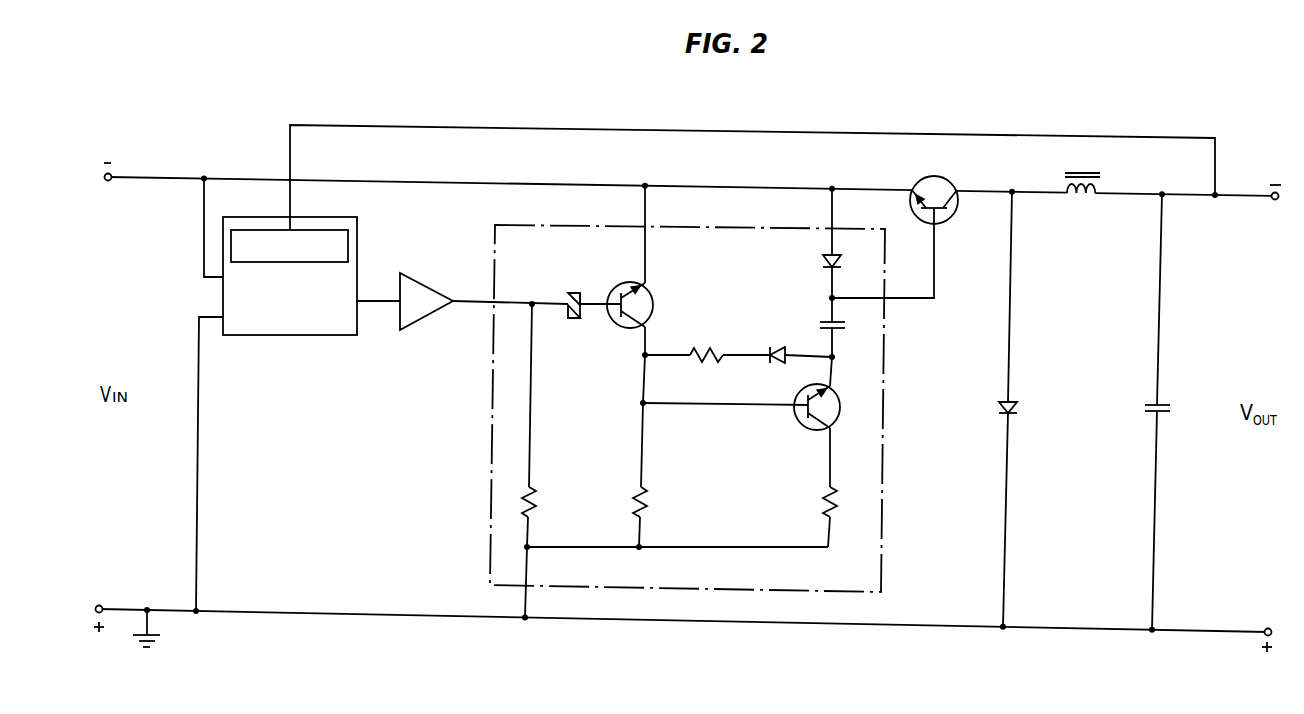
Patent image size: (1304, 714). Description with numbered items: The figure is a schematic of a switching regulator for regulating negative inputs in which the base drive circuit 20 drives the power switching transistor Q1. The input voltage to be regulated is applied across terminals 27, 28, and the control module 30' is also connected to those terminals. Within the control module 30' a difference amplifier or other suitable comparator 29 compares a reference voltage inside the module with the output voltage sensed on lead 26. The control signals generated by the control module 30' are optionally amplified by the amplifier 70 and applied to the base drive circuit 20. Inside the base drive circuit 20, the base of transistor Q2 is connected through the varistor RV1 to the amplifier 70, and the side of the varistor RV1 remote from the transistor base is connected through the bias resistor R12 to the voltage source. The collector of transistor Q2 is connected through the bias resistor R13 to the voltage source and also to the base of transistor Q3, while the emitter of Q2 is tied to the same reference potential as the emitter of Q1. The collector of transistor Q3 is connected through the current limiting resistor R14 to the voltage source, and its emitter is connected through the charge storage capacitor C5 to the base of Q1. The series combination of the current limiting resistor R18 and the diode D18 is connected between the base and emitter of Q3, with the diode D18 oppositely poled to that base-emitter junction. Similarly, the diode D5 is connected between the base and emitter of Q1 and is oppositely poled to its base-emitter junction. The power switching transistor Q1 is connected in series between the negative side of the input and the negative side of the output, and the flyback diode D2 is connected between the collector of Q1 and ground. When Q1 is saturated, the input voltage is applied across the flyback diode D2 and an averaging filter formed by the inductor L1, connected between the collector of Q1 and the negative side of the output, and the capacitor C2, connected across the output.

The terminal 27 is at (105, 177).
The terminal 28 is at (99, 605).
The lead 26 is at (771, 127).
The comparator 29 is at (349, 244).
The control module 30' is at (301, 395).
The amplifier 70 is at (428, 287).
The base drive circuit 20 is at (490, 500).
The power switching transistor Q1 is at (925, 178).
The npn transistor Q2 is at (633, 330).
The npn transistor Q3 is at (803, 430).
The varistor RV1 is at (577, 290).
The bias resistor R12 is at (540, 500).
The bias resistor R13 is at (660, 500).
The current limiting resistor R14 is at (821, 500).
The current limiting resistor R18 is at (713, 345).
The diode D18 is at (779, 345).
The diode D5 is at (822, 265).
The flyback diode D2 is at (995, 404).
The capacitor C5 is at (848, 322).
The capacitor C2 is at (1138, 406).
The inductor L1 is at (1079, 198).